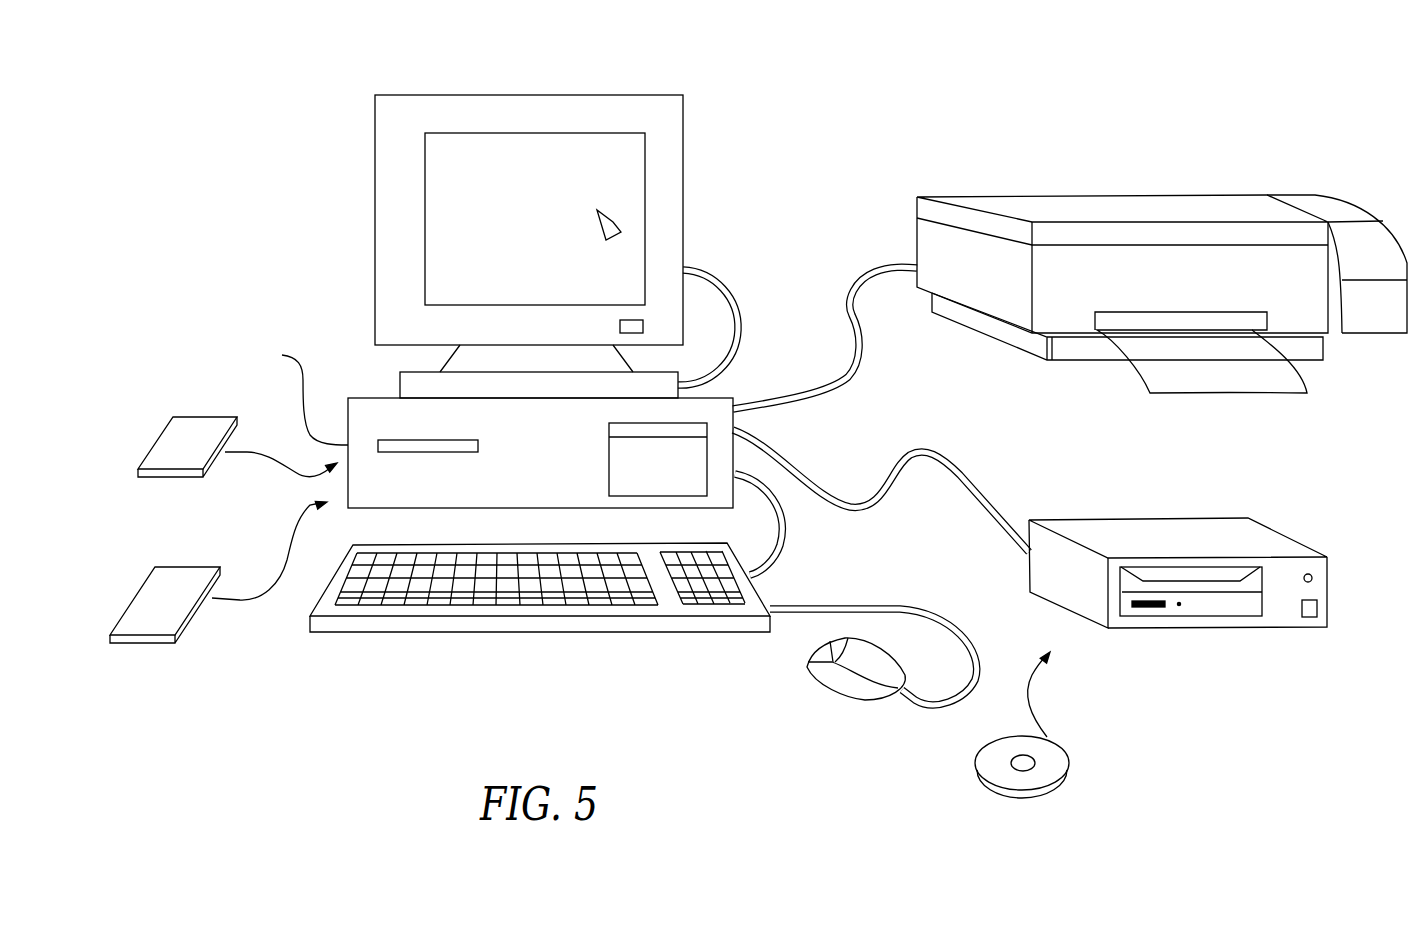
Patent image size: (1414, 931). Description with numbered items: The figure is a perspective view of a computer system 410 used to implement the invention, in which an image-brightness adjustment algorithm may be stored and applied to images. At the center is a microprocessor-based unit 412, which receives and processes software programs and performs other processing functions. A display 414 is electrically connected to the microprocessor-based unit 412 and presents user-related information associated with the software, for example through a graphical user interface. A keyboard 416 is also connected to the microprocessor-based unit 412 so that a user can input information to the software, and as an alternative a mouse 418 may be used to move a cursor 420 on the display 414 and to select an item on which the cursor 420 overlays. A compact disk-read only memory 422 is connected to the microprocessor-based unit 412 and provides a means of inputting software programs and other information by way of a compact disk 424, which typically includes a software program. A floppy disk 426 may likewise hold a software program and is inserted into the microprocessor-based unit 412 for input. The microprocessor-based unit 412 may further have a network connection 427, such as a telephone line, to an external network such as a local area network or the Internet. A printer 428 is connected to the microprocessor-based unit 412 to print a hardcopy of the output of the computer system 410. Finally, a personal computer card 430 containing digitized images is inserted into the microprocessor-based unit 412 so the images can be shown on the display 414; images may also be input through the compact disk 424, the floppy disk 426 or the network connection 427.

The computer system 410 is at (762, 148).
The microprocessor-based unit 412 is at (372, 398).
The display 414 is at (498, 95).
The keyboard 416 is at (343, 633).
The mouse 418 is at (843, 693).
The cursor 420 is at (613, 222).
The compact disk-read only memory (CD-ROM) 422 is at (1140, 520).
The compact disk 424 is at (1070, 762).
The floppy disk 426 is at (165, 430).
The network connection 427 is at (276, 354).
The printer 428 is at (1117, 195).
The personal computer card (PC card) 430 is at (137, 579).